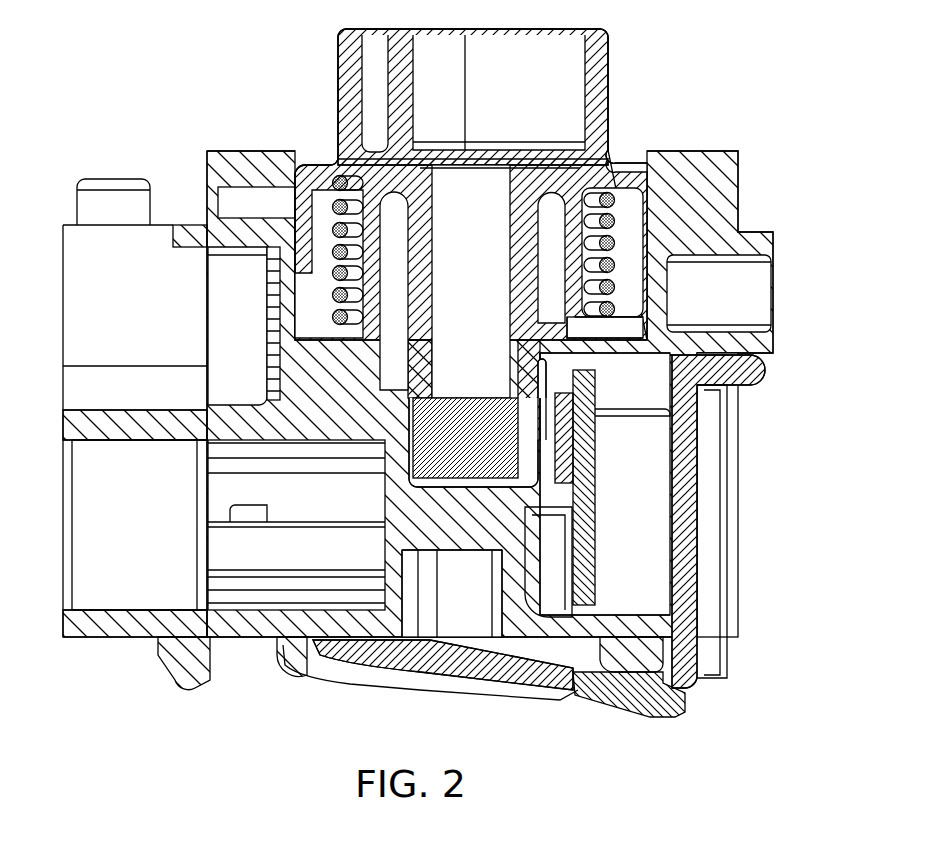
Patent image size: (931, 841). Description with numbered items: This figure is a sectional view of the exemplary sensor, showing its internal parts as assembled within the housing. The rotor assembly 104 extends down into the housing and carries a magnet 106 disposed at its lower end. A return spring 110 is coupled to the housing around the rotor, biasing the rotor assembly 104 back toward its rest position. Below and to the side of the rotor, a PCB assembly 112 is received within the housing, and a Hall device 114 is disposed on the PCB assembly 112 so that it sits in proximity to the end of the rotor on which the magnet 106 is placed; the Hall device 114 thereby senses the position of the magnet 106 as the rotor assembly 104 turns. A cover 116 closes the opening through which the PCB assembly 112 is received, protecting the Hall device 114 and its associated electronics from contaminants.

The rotor assembly 104 is at (598, 88).
The return spring 110 is at (606, 192).
The magnet 106 is at (470, 405).
The Hall device 114 is at (568, 401).
The PCB assembly 112 is at (588, 530).
The cover 116 is at (677, 700).